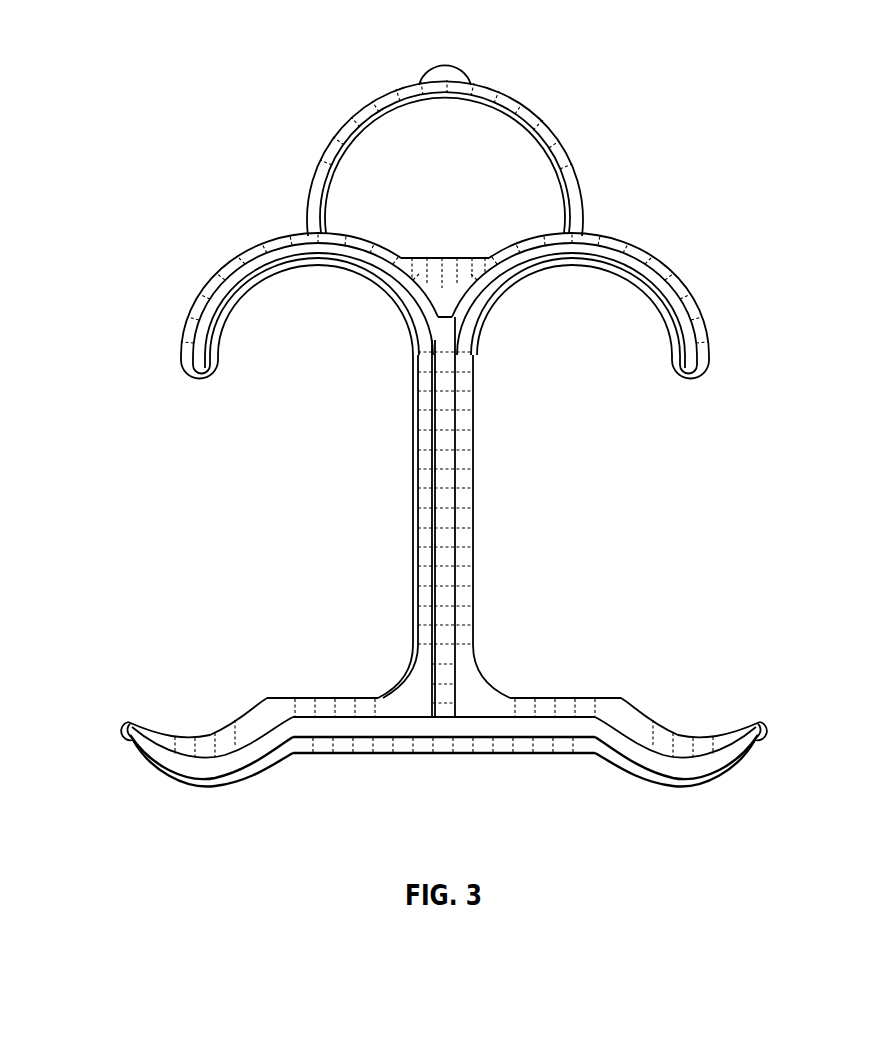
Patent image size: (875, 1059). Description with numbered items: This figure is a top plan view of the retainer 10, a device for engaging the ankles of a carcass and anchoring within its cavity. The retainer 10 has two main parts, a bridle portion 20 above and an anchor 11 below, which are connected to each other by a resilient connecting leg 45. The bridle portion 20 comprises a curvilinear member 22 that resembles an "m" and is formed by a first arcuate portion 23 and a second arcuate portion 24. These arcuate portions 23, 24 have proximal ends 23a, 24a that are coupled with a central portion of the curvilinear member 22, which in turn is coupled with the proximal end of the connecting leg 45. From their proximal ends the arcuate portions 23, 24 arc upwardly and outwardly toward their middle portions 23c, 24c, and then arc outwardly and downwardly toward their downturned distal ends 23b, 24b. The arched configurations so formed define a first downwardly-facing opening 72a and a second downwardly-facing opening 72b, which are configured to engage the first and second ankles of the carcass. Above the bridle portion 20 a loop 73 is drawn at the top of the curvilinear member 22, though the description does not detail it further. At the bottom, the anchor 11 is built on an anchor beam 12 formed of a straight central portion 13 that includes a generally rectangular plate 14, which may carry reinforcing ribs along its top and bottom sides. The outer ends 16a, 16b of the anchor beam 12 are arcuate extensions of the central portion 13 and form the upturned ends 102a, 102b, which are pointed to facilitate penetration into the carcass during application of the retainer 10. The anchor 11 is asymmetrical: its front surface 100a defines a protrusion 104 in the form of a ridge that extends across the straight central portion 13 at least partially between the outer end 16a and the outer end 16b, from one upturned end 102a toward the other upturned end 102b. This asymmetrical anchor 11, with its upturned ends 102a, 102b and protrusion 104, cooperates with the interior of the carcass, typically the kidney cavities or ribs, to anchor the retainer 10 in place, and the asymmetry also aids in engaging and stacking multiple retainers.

The retainer 10 is at (196, 50).
The bridle portion 20 is at (137, 68).
The loop 73 is at (553, 130).
The second arcuate portion 24 is at (248, 252).
The proximal end of second arcuate portion 24a is at (400, 326).
The downturned distal end of second arcuate portion 24b is at (197, 378).
The middle portion of second arcuate portion 24c is at (320, 266).
The first arcuate portion 23 is at (645, 250).
The proximal end of first arcuate portion 23a is at (484, 326).
The downturned distal end of first arcuate portion 23b is at (684, 378).
The middle portion of first arcuate portion 23c is at (582, 268).
The curvilinear member 22 is at (707, 340).
The first downwardly-facing opening 72a is at (593, 343).
The second downwardly-facing opening 72b is at (289, 345).
The resilient connecting leg 45 is at (478, 528).
The anchor 11 is at (221, 687).
The anchor beam 12 is at (327, 768).
The straight central portion 13 is at (422, 758).
The generally rectangular plate 14 is at (517, 748).
The protrusion 104 is at (585, 724).
The front surface 100a is at (462, 777).
The outer end of anchor beam 16a is at (136, 718).
The outer end of anchor beam 16b is at (762, 718).
The upturned end 102a is at (119, 735).
The upturned end 102b is at (764, 734).